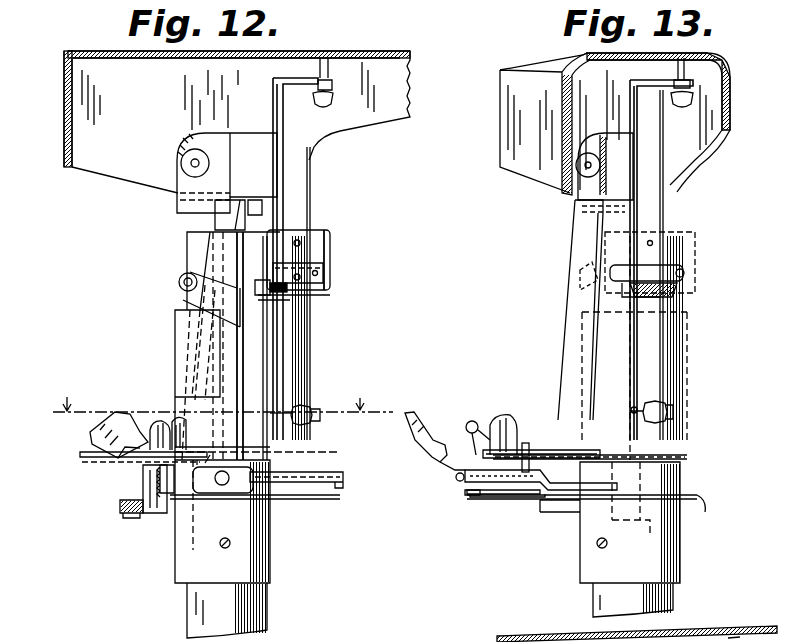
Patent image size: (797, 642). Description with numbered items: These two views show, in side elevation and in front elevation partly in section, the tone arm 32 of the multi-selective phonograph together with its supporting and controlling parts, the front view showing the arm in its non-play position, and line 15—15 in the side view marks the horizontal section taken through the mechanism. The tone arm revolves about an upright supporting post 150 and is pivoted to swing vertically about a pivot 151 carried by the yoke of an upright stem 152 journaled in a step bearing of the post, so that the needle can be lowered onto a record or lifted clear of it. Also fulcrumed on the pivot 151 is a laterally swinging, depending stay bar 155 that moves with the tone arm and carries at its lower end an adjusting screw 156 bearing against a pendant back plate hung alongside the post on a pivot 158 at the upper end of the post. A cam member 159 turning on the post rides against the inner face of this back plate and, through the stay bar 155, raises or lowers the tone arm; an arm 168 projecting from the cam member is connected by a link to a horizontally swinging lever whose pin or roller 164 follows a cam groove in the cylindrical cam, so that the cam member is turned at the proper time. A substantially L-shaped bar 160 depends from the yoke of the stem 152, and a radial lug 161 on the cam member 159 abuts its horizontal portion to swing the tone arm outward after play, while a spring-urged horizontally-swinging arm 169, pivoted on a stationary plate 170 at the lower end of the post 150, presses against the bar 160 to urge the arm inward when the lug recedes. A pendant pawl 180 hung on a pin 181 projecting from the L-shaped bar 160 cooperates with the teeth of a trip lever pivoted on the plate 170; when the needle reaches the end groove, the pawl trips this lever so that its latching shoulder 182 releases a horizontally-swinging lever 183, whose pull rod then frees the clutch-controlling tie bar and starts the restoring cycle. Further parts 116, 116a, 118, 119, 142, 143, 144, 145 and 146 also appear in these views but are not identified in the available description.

In FIG. 12, the tone arm 32 is at (404, 71).
In FIG. 13, the tone arm 32 is at (712, 107).
In FIG. 12, the section line 15 is at (224, 393).
In FIG. 13, the bar 116 is at (523, 490).
In FIG. 12, the bracket 116a is at (150, 517).
In FIG. 12, the lever arm 118 is at (123, 430).
In FIG. 13, the lever arm 118 is at (458, 482).
In FIG. 12, the blade lever 119 is at (90, 414).
In FIG. 13, the blade lever 119 is at (450, 443).
In FIG. 12, the latch lever 142 is at (290, 288).
In FIG. 13, the latch lever 142 is at (660, 272).
In FIG. 12, the bracket box 143 is at (322, 249).
In FIG. 13, the bracket box 143 is at (695, 281).
In FIG. 12, the lever 144 is at (270, 297).
In FIG. 13, the lever 144 is at (673, 291).
In FIG. 12, the bracket 145 is at (273, 272).
In FIG. 12, the clip 146 is at (143, 467).
In FIG. 12, the upright supporting post 150 is at (187, 255).
In FIG. 13, the upright supporting post 150 is at (600, 598).
In FIG. 12, the pivot 151 is at (190, 163).
In FIG. 13, the pivot 151 is at (583, 177).
In FIG. 12, the upright stem 152 is at (213, 218).
In FIG. 12, the stay bar 155 is at (310, 337).
In FIG. 13, the stay bar 155 is at (658, 209).
In FIG. 12, the adjusting screw 156 is at (320, 418).
In FIG. 13, the adjusting screw 156 is at (672, 408).
In FIG. 12, the pivot 158 is at (182, 289).
In FIG. 13, the pivot 158 is at (567, 278).
In FIG. 12, the cam member 159 is at (240, 452).
In FIG. 13, the cam member 159 is at (678, 453).
In FIG. 12, the L-shaped bar 160 is at (200, 397).
In FIG. 13, the L-shaped bar 160 is at (573, 305).
In FIG. 12, the radial lug 161 is at (83, 456).
In FIG. 13, the radial lug 161 is at (490, 455).
In FIG. 13, the pin or roller 164 is at (570, 523).
In FIG. 12, the arm 168 is at (120, 508).
In FIG. 12, the horizontally-swinging arm 169 is at (213, 557).
In FIG. 13, the horizontally-swinging arm 169 is at (525, 447).
In FIG. 13, the stationary plate 170 is at (693, 497).
In FIG. 12, the pendant pawl 180 is at (157, 440).
In FIG. 13, the pendant pawl 180 is at (487, 422).
In FIG. 12, the pin 181 is at (153, 420).
In FIG. 13, the pin 181 is at (470, 427).
In FIG. 12, the latching shoulder 182 is at (280, 497).
In FIG. 13, the latching shoulder 182 is at (478, 491).
In FIG. 12, the horizontally-swinging lever 183 is at (277, 510).
In FIG. 13, the horizontally-swinging lever 183 is at (480, 494).